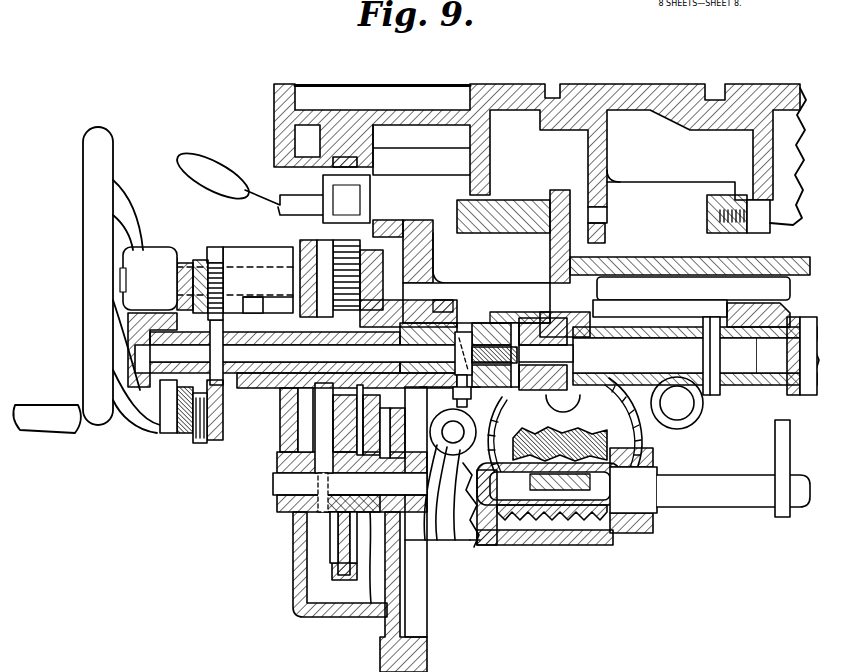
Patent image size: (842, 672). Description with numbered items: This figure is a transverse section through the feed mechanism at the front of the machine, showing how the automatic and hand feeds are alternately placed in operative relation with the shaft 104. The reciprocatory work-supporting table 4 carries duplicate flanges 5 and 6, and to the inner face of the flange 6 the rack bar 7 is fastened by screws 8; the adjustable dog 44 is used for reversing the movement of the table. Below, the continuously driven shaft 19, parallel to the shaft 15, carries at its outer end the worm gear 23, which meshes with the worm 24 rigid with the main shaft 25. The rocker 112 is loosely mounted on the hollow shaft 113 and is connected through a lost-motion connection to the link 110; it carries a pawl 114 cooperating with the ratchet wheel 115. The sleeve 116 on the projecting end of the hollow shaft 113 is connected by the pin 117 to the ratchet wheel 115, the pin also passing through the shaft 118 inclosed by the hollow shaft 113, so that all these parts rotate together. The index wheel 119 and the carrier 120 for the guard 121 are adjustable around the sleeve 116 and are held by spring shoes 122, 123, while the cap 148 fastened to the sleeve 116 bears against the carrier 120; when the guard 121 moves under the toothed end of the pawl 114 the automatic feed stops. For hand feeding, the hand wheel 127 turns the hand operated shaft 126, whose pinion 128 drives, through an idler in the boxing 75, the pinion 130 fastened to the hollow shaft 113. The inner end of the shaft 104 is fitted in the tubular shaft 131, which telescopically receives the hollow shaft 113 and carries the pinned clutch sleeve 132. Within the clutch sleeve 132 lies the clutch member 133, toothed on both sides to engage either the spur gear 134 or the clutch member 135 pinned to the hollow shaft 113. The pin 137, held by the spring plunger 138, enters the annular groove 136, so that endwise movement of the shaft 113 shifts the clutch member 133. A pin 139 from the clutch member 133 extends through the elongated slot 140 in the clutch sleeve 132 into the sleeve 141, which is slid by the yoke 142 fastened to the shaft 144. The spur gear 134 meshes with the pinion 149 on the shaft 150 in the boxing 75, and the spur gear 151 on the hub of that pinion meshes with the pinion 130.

The reciprocatory work-supporting table 4 is at (634, 92).
The flange 5 is at (608, 152).
The flange 6 is at (760, 157).
The rack bar 7 is at (707, 212).
The screws 8 is at (787, 223).
The shaft 15 is at (683, 415).
The shaft 19 is at (570, 403).
The worm gear 23 is at (627, 430).
The worm 24 is at (577, 530).
The main shaft 25 is at (797, 500).
The adjustable dog 44 is at (263, 168).
The boxing 75 is at (280, 600).
The shaft 104 is at (788, 356).
The link 110 is at (263, 257).
The rocker 112 is at (300, 258).
The hollow shaft 113 is at (573, 353).
The pawl 114 is at (217, 243).
The ratchet wheel 115 is at (213, 447).
The sleeve 116 is at (147, 327).
The pin 117 is at (213, 347).
The shaft 118 is at (361, 348).
The index wheel 119 is at (205, 252).
The carrier 120 is at (153, 252).
The guard 121 is at (200, 252).
The spring shoe 122 is at (227, 427).
The spring shoe 123 is at (157, 420).
The hand operated shaft 126 is at (118, 280).
The hand wheel 127 is at (93, 387).
The pinion 128 is at (347, 253).
The pinion 130 is at (330, 393).
The tubular shaft 131 is at (673, 330).
The clutch sleeve 132 is at (593, 317).
The clutch member 133 is at (465, 332).
The spur gear 134 is at (410, 253).
The clutch member 135 is at (563, 393).
The annular groove 136 is at (472, 347).
The pin 137 is at (460, 332).
The spring plunger 138 is at (487, 350).
The pin 139 is at (437, 445).
The elongated slot 140 is at (447, 440).
The sleeve 141 is at (427, 545).
The yoke 142 is at (433, 547).
The shaft 144 is at (480, 543).
The cap 148 is at (117, 430).
The pinion 149 is at (377, 520).
The shaft 150 is at (350, 447).
The spur gear 151 is at (347, 577).